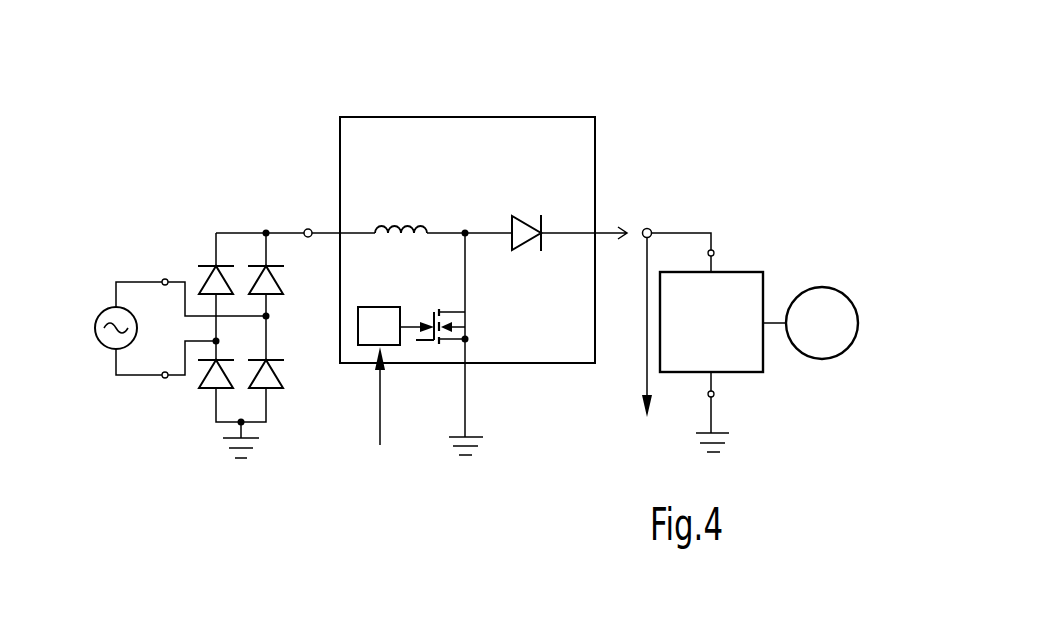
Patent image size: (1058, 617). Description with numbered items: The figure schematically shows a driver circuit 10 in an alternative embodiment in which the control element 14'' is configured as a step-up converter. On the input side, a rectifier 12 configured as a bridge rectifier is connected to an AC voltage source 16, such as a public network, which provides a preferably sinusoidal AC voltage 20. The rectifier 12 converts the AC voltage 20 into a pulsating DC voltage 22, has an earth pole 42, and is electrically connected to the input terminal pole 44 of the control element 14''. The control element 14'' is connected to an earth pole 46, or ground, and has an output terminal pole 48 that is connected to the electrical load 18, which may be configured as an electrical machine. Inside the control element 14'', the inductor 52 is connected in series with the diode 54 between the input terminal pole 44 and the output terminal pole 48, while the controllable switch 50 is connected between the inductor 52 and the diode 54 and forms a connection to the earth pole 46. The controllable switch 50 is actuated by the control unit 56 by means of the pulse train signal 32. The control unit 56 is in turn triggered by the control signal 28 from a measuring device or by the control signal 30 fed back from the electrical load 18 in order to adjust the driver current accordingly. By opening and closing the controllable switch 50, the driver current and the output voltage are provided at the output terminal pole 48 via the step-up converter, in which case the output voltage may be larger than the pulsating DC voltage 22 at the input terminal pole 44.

The driver circuit 10 is at (345, 87).
The rectifier 12 is at (215, 192).
The control element 14'' is at (483, 271).
The AC voltage source 16 is at (110, 310).
The electrical load 18 is at (763, 223).
The AC voltage 20 is at (151, 278).
The pulsating DC voltage 22 is at (280, 230).
The control signal 28 is at (422, 425).
The control signal 30 is at (383, 410).
The pulse train signal 32 is at (407, 320).
The earth pole 42 is at (228, 428).
The input terminal pole 44 is at (304, 223).
The earth pole 46 is at (470, 390).
The output terminal pole 48 is at (647, 225).
The controllable switch 50 is at (463, 319).
The inductor 52 is at (397, 220).
The diode 54 is at (522, 217).
The control unit 56 is at (371, 306).